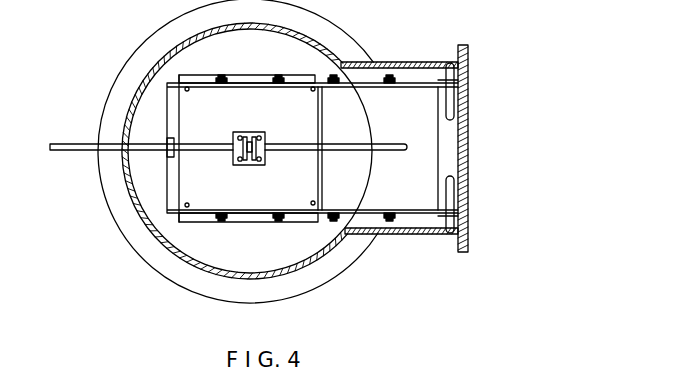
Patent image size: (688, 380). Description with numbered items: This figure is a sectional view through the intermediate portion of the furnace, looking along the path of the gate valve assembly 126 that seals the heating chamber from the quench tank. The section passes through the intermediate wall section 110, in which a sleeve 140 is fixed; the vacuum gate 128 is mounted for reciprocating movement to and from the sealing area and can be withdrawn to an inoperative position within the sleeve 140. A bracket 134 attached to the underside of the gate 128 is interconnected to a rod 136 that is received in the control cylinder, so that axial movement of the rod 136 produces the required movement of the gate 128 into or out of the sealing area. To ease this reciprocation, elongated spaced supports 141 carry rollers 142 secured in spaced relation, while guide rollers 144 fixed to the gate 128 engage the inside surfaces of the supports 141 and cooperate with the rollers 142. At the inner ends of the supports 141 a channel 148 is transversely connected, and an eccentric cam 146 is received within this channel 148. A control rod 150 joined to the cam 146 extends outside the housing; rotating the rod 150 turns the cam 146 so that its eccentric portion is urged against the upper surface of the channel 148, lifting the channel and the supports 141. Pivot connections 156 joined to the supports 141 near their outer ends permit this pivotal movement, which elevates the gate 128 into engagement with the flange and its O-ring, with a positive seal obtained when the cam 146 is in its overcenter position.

The intermediate wall section 110 is at (152, 236).
The gate valve assembly 126 is at (208, 63).
The vacuum gate 128 is at (306, 187).
The bracket 134 is at (250, 130).
The rod 136 is at (336, 144).
The sleeve 140 is at (445, 237).
The elongated spaced supports 141 is at (418, 75).
The rollers 142 is at (277, 75).
The guide rollers 144 is at (189, 91).
The eccentric cam 146 is at (174, 147).
The channel 148 is at (172, 178).
The control rod 150 is at (82, 151).
The pivot connections 156 is at (450, 100).